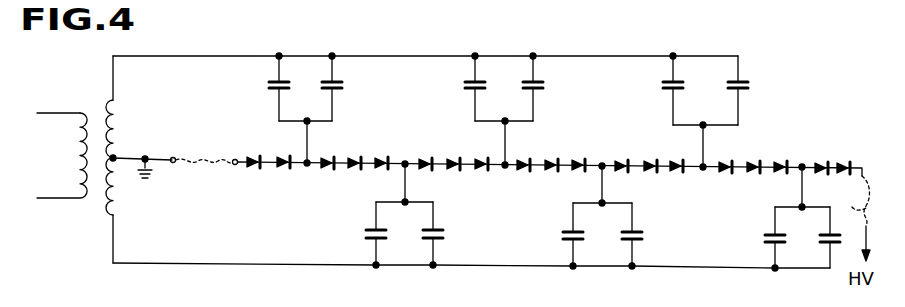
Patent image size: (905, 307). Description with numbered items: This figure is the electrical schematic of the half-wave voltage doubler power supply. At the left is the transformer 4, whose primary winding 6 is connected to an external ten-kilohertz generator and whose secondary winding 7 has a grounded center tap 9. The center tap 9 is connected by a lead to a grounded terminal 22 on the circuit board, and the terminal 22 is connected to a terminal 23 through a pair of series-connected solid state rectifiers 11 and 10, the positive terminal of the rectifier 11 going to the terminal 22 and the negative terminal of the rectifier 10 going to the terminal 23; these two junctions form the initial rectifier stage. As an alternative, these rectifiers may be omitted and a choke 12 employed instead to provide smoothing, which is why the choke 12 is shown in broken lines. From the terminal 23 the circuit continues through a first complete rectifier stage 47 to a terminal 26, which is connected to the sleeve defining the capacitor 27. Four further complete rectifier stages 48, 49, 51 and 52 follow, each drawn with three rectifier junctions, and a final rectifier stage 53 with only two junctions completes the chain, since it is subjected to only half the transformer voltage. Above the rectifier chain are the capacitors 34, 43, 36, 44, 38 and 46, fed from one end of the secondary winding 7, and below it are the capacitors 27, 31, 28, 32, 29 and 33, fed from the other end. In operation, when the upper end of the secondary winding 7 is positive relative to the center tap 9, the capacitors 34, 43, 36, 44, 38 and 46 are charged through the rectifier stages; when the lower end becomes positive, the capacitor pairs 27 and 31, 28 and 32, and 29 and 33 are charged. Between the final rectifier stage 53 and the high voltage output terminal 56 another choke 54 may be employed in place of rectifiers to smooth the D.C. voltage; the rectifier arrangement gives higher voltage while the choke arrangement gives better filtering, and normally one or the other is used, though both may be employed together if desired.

The transformer 4 is at (82, 242).
The primary winding 6 is at (66, 110).
The secondary winding 7 is at (119, 203).
The center tap 9 is at (118, 157).
The solid state rectifier 10 is at (282, 170).
The solid state rectifier 11 is at (247, 168).
The choke 12 is at (197, 168).
The terminal 22 is at (237, 158).
The terminal 23 is at (307, 168).
The terminal 26 is at (405, 160).
The capacitor 27 is at (364, 234).
The capacitor 28 is at (558, 236).
The capacitor 29 is at (756, 238).
The capacitor 31 is at (442, 250).
The capacitor 32 is at (652, 236).
The capacitor 33 is at (812, 238).
The capacitor 34 is at (262, 84).
The capacitor 36 is at (467, 88).
The capacitor 38 is at (660, 92).
The capacitor 43 is at (350, 90).
The capacitor 44 is at (542, 90).
The capacitor 46 is at (754, 92).
The rectifier stage 47 is at (385, 152).
The rectifier stage 48 is at (475, 152).
The rectifier stage 49 is at (585, 152).
The rectifier stage 51 is at (678, 152).
The rectifier stage 52 is at (782, 154).
The final rectifier stage 53 is at (853, 153).
The choke 54 is at (847, 201).
The high voltage output terminal 56 is at (858, 250).